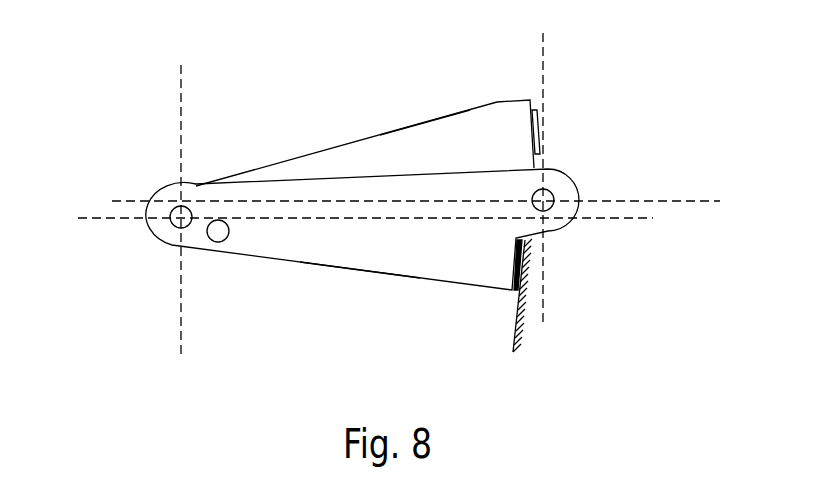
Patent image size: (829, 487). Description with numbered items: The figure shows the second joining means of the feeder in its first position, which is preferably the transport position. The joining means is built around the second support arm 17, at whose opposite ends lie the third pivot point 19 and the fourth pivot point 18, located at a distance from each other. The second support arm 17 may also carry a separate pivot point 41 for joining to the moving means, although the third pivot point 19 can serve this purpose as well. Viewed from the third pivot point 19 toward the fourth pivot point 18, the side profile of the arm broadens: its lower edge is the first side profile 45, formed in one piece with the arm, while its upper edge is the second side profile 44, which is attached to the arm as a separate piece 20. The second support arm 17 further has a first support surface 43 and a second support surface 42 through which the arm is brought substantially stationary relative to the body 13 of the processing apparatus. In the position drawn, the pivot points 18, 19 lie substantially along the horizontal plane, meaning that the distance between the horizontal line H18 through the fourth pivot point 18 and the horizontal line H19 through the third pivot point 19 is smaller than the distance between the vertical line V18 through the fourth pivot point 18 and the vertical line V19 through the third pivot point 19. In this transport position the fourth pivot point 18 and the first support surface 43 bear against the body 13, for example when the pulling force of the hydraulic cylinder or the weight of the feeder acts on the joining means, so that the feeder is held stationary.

The body of the processing apparatus 13 is at (517, 314).
The second support arm 17 is at (290, 234).
The fourth pivot point 18 is at (548, 194).
The third pivot point 19 is at (192, 186).
The separate piece 20 is at (325, 165).
The separate pivot point 41 is at (216, 238).
The second support surface 42 is at (537, 130).
The first support surface 43 is at (520, 250).
The second side profile 44 is at (410, 128).
The first side profile 45 is at (368, 272).
The vertical line via fourth pivot point V18 is at (544, 167).
The vertical line via third pivot point V19 is at (183, 200).
The horizontal line via fourth pivot point H18 is at (442, 203).
The horizontal line via third pivot point H19 is at (342, 218).